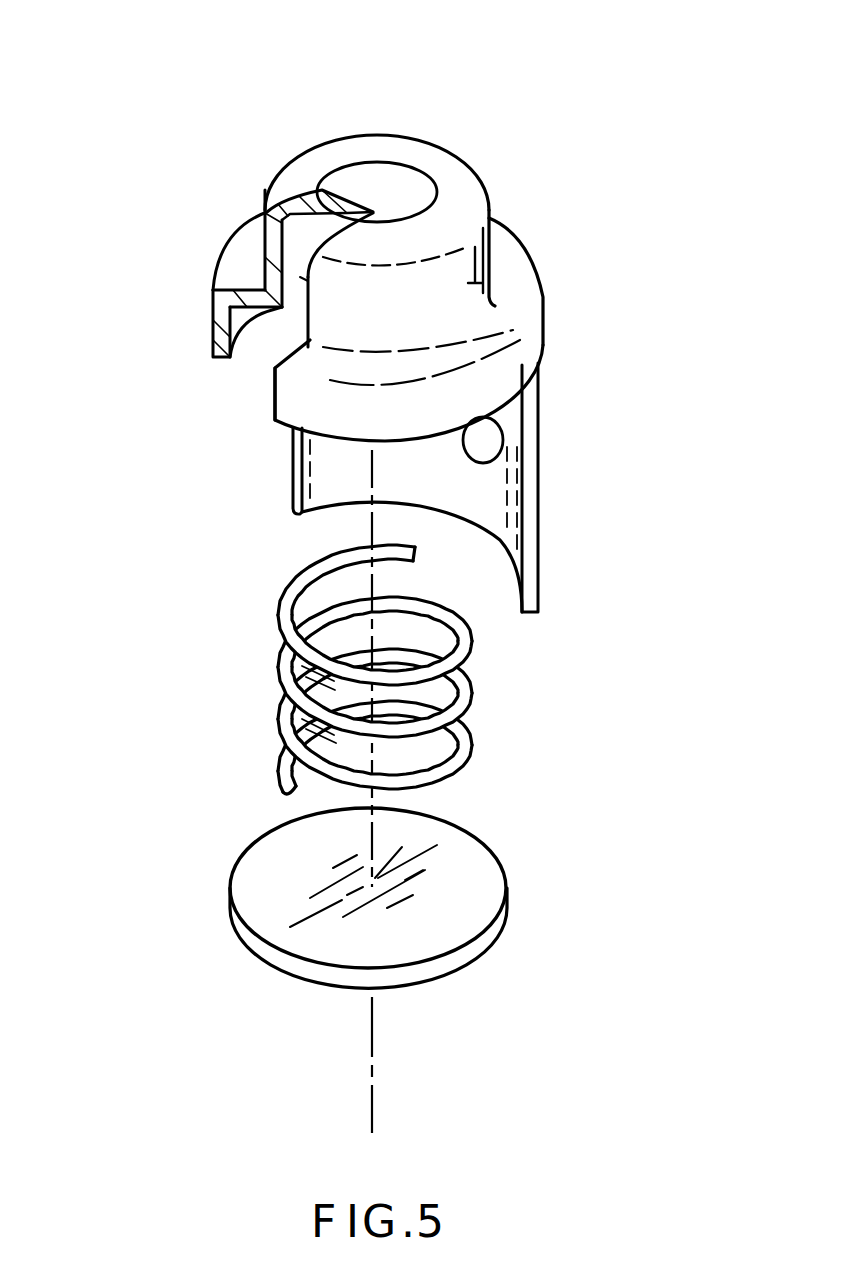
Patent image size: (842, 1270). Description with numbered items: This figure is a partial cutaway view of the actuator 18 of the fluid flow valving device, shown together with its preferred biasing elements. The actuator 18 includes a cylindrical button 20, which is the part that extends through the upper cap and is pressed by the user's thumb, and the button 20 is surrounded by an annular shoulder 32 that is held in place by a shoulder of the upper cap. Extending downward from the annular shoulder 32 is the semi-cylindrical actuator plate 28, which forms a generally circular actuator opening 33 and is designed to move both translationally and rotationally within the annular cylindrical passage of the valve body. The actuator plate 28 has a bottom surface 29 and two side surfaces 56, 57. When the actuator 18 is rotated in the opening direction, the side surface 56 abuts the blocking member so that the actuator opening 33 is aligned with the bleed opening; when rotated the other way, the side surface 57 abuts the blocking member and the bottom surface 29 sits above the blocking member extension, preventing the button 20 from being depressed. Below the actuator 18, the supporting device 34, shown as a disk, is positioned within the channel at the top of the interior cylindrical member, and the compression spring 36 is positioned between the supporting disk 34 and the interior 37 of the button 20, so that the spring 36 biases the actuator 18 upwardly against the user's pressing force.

The actuator 18 is at (370, 348).
The button 20 is at (470, 282).
The actuator plate 28 is at (396, 487).
The actuator plate bottom surface 29 is at (331, 517).
The annular shoulder 32 is at (223, 305).
The actuator opening 33 is at (473, 443).
The supporting device 34 is at (266, 980).
The compression spring 36 is at (476, 763).
The interior of the button 37 is at (307, 231).
The side surface 56 is at (289, 488).
The side surface 57 is at (527, 582).